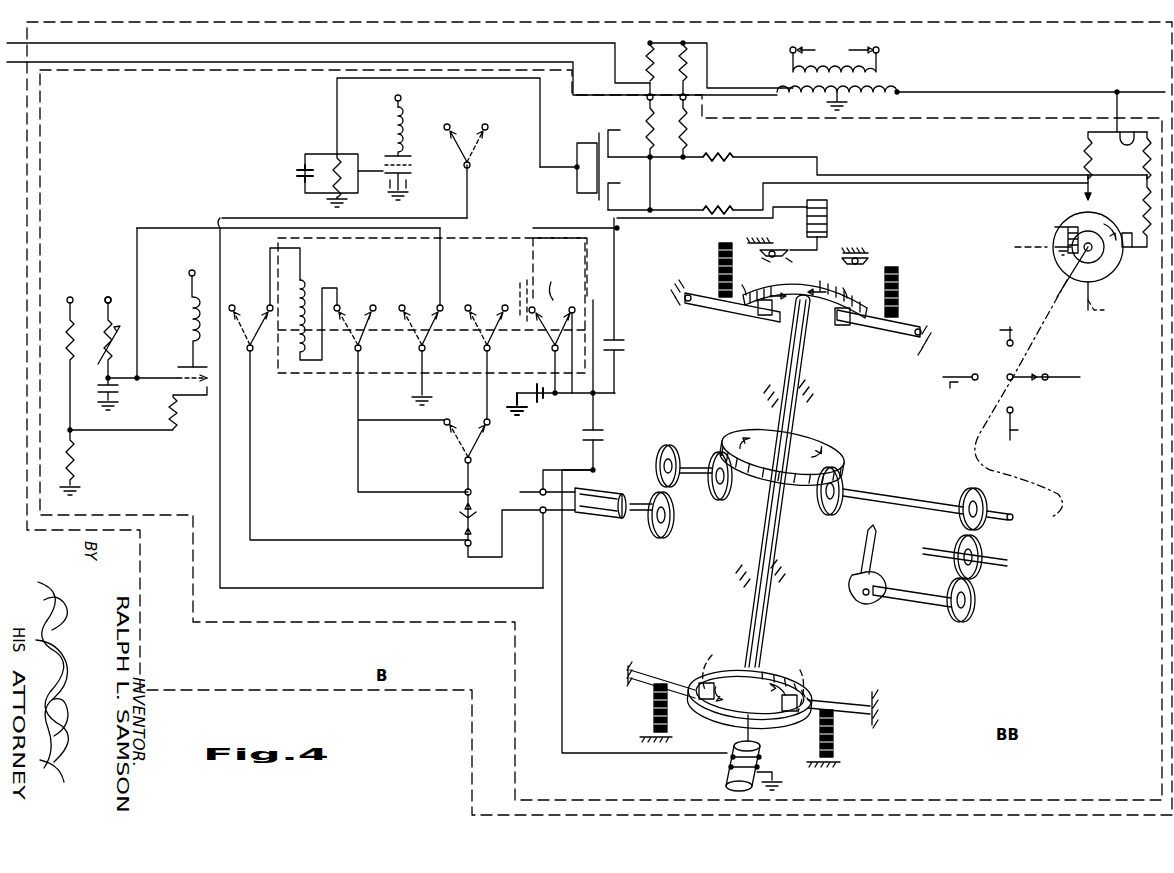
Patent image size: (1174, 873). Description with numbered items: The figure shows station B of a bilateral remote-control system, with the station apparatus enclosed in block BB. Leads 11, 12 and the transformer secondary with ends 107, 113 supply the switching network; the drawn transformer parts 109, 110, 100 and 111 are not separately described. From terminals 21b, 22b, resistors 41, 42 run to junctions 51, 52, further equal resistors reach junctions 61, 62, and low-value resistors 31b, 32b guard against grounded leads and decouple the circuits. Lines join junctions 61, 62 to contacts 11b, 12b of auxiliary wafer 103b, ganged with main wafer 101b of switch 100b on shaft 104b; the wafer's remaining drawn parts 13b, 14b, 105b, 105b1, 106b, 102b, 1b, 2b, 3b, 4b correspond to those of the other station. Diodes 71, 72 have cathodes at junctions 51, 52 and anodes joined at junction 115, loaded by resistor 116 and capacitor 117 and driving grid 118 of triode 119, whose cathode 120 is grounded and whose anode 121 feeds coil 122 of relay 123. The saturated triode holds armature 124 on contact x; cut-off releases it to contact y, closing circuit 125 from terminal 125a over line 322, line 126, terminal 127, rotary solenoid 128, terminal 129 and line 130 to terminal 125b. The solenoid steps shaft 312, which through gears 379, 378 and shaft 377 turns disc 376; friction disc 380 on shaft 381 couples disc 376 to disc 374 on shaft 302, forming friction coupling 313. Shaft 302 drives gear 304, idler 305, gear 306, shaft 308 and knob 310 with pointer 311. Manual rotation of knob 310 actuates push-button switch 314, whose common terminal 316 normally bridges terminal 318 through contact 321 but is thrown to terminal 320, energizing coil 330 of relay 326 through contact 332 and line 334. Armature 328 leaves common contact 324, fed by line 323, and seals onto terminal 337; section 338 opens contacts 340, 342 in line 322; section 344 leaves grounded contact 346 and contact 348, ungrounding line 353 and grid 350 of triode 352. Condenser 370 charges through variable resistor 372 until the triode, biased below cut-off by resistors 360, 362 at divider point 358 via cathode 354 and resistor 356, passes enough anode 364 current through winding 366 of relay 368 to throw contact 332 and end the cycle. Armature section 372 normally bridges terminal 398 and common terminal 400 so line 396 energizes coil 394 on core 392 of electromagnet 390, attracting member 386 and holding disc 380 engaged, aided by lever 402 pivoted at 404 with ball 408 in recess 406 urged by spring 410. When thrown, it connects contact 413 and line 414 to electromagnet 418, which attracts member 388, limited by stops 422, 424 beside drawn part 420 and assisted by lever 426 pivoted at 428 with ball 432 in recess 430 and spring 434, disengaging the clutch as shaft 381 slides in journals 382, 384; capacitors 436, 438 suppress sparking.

The lead 12 is at (602, 43).
The lead 11 is at (554, 60).
The resistor 32b is at (648, 64).
The resistor 31b is at (671, 69).
The terminal 22b is at (647, 98).
The terminal 21b is at (686, 97).
The resistor 42 is at (648, 126).
The resistor 41 is at (686, 130).
The junction point 51 is at (688, 162).
The junction 52 is at (655, 205).
The diode 71 is at (602, 126).
The diode 72 is at (604, 160).
The junction 115 is at (566, 170).
The autotransformer winding 109 is at (886, 60).
The primary winding 110 is at (786, 74).
The end of secondary 107 is at (756, 94).
The secondary winding 100 is at (824, 100).
The center tap ground 111 is at (845, 105).
The end of secondary 113 is at (899, 94).
The junction 62 is at (1092, 186).
The contact 12b is at (1092, 209).
The junction 61 is at (1150, 211).
The switch 100b is at (1116, 424).
The field coil 106b is at (1058, 232).
The contact 13b is at (1038, 259).
The auxiliary wafer 103b is at (1054, 220).
The shaft 105b is at (1062, 277).
The contact 11b is at (1127, 261).
The shaft end 105b1 is at (1108, 290).
The bracket 14b is at (1113, 312).
The common shaft 104b is at (1056, 476).
The link 102b is at (1028, 378).
The contact 1b is at (1046, 372).
The contact 3b is at (964, 372).
The contact 2b is at (1020, 331).
The contact 4b is at (1014, 410).
The main switch wafer 101b is at (958, 409).
The line 414 is at (578, 220).
The electromagnet 418 is at (855, 200).
The stop 422 is at (771, 240).
The armature 420 is at (782, 256).
The stop 424 is at (860, 255).
The magnetic member 388 is at (816, 273).
The ball 432 is at (809, 279).
The magnetic lever 426 is at (922, 344).
The tension spring 434 is at (899, 288).
The pivot 428 is at (920, 314).
The recess portion 430 is at (846, 328).
The shaft 381 is at (744, 616).
The journal 384 is at (770, 380).
The friction drive arrangement 313 is at (854, 404).
The journal 382 is at (750, 576).
The friction disc member 380 is at (830, 439).
The magnetic member 386 is at (772, 671).
The disc member 376 is at (729, 478).
The shaft 377 is at (697, 457).
The spur gear 378 is at (696, 445).
The spur gear 379 is at (676, 521).
The shaft 312 is at (638, 493).
The rotary solenoid 128 is at (586, 522).
The terminal 129 is at (550, 468).
The terminal 127 is at (538, 484).
The line 130 is at (486, 564).
The disc member 374 is at (840, 503).
The rotatable shaft 302 is at (892, 495).
The spur gear 304 is at (966, 483).
The idler pinion 305 is at (956, 541).
The rotatable shaft 308 is at (906, 589).
The spur gear 306 is at (976, 599).
The selector knob 310 is at (876, 609).
The push-button switch 314 is at (848, 582).
The dial pointer 311 is at (878, 549).
The lever member 402 is at (850, 695).
The pivot 404 is at (862, 691).
The tension spring 410 is at (836, 737).
The recess portion 406 is at (763, 676).
The ball 408 is at (790, 734).
The core 392 is at (758, 741).
The coil 394 is at (758, 765).
The electromagnet 390 is at (717, 777).
The line 396 is at (634, 757).
The capacitor 436 is at (622, 360).
The capacitor 438 is at (564, 432).
The common terminal 400 is at (575, 353).
The contact 413 is at (553, 280).
The terminal 398 is at (565, 285).
The variable resistor 372 is at (520, 304).
The relay 326 is at (503, 236).
The line 126 is at (410, 580).
The contact 332 is at (264, 306).
The relay 368 is at (258, 272).
The relay coil 330 is at (308, 284).
The relay armature 328 is at (362, 306).
The terminal 337 is at (360, 283).
The armature section 344 is at (408, 292).
The line 353 is at (378, 242).
The line 322 is at (509, 164).
The contact 348 is at (438, 298).
The contact 342 is at (470, 308).
The armature section 338 is at (496, 324).
The common contact 324 is at (370, 336).
The grounded contact 346 is at (426, 344).
The contact 340 is at (493, 342).
The selector terminal 320 is at (462, 404).
The selector terminal 318 is at (490, 426).
The contact 321 is at (478, 446).
The line 323 is at (408, 486).
The common terminal 316 is at (460, 466).
The terminal 125a is at (468, 492).
The terminal 125b is at (465, 543).
The line 334 is at (396, 532).
The resistor 360 is at (74, 330).
The condenser 370 is at (122, 387).
The winding 366 is at (186, 311).
The triode 352 is at (173, 343).
The grid 350 is at (172, 372).
The anode 364 is at (196, 364).
The cathode 354 is at (186, 404).
The resistor 356 is at (168, 412).
The voltage divider point 358 is at (64, 426).
The resistor 362 is at (74, 452).
The circuit 125 is at (531, 124).
The relay 123 is at (439, 136).
The relay coil 122 is at (392, 120).
The triode 119 is at (384, 142).
The anode 121 is at (410, 148).
The grid 118 is at (414, 174).
The cathode 120 is at (388, 195).
The capacitor 117 is at (298, 176).
The resistor 116 is at (338, 180).
The relay armature 124 is at (458, 164).